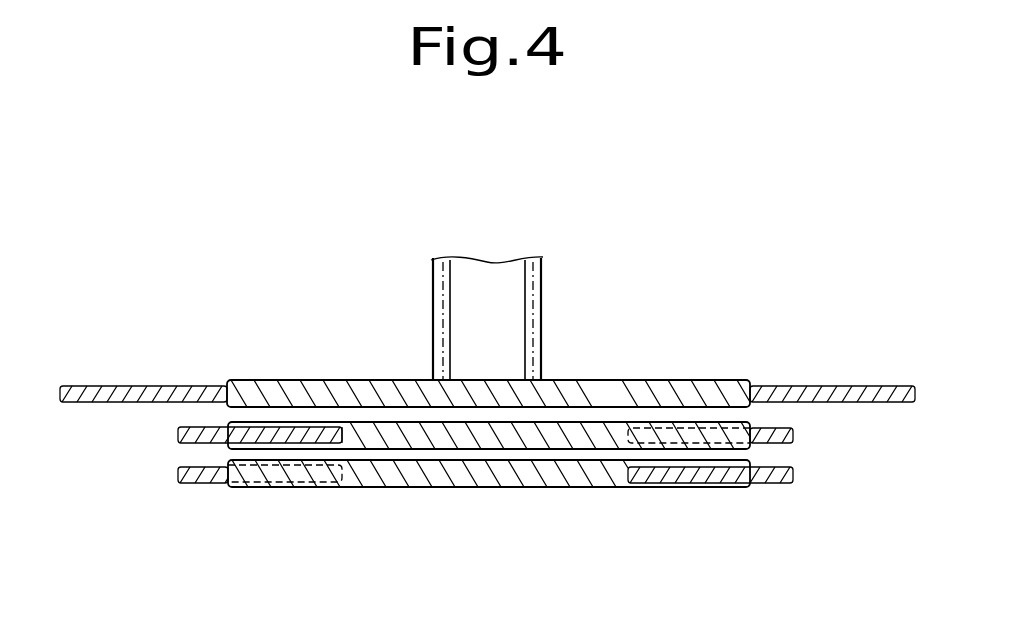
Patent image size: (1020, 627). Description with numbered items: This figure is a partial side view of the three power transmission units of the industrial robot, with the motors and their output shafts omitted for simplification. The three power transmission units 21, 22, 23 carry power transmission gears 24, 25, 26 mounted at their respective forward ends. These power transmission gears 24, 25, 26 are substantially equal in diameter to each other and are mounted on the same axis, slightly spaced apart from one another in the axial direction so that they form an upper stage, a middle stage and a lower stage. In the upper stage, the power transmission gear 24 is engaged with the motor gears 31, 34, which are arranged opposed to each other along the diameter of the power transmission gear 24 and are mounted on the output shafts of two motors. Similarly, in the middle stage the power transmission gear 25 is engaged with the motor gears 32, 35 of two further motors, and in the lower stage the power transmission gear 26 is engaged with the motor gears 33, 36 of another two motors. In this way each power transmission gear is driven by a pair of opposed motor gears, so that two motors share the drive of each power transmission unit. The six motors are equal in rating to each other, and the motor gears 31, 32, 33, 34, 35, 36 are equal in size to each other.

The power transmission unit 21 is at (543, 267).
The power transmission unit 22 is at (538, 312).
The power transmission unit 23 is at (536, 354).
The power transmission gear 24 is at (673, 382).
The power transmission gear 25 is at (580, 427).
The power transmission gear 26 is at (515, 490).
The motor gear 31 is at (113, 386).
The motor gear 32 is at (793, 436).
The motor gear 33 is at (786, 483).
The motor gear 34 is at (848, 386).
The motor gear 35 is at (180, 432).
The motor gear 36 is at (183, 485).